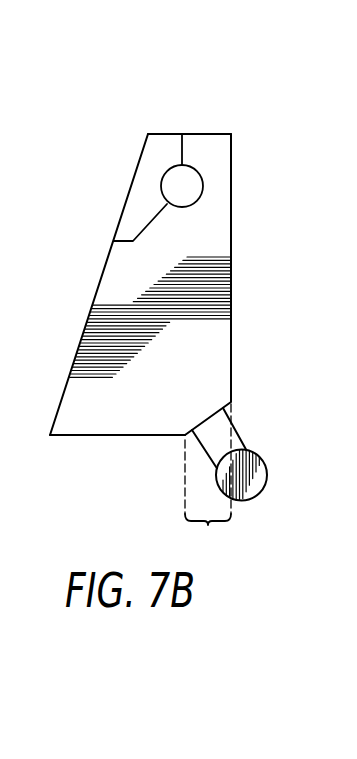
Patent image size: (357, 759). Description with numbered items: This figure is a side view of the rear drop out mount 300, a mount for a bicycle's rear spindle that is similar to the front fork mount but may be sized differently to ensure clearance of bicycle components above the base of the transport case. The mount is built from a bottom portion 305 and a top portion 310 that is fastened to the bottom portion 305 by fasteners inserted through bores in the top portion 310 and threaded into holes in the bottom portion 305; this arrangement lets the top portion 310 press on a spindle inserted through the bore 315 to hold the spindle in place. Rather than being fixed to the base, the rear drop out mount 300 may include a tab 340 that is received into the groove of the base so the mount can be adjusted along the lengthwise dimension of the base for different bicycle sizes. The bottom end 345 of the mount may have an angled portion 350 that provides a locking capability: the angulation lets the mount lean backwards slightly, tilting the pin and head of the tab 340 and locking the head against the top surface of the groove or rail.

The rear drop out mount 300 is at (190, 86).
The bottom portion 305 is at (231, 322).
The top portion 310 is at (134, 176).
The bore 315 is at (188, 184).
The tab 340 is at (263, 467).
The bottom end 345 is at (102, 435).
The angled portion 350 is at (208, 478).